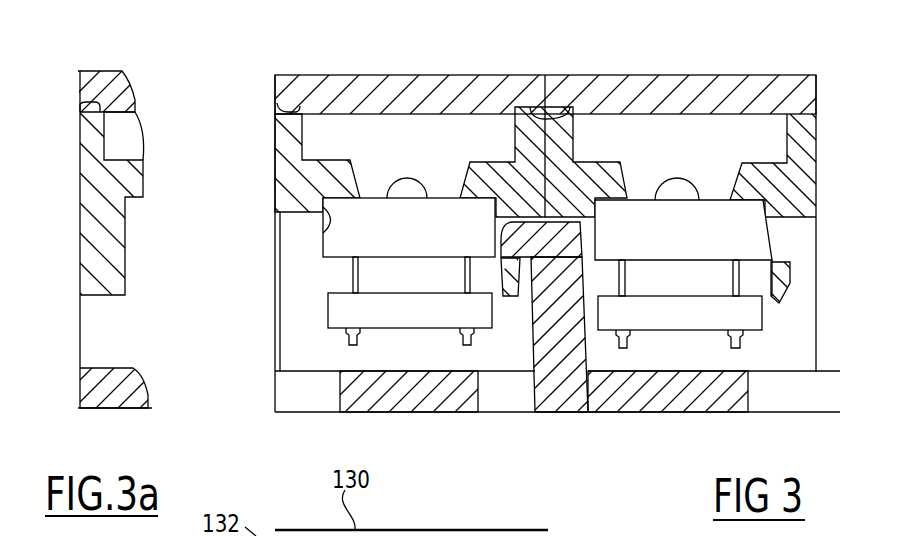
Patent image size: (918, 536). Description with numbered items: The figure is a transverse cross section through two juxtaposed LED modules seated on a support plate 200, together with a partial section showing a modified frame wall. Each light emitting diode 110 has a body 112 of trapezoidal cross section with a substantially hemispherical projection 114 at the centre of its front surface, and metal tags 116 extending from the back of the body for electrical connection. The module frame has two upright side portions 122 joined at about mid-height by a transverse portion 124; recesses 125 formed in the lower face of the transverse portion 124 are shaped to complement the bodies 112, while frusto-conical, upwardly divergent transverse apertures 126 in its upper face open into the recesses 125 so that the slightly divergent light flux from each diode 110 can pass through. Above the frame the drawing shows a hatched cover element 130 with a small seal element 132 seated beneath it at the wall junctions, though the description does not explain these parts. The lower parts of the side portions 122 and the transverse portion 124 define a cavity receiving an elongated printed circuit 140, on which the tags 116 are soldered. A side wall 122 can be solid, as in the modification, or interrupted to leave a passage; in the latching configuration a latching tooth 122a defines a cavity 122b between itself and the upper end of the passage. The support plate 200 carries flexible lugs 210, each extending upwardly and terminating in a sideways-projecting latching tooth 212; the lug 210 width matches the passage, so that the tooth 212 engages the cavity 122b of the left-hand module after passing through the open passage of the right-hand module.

In FIG. 3, the light emitting diode 110 is at (486, 244).
In FIG. 3, the body 112 is at (412, 243).
In FIG. 3, the projection 114 is at (405, 186).
In FIG. 3, the metal tags 116 is at (465, 278).
In FIG. 3A, the upright side portions 122 is at (80, 143).
In FIG. 3, the upright side portions 122 is at (503, 112).
In FIG. 3, the latching tooth 122a is at (512, 290).
In FIG. 3, the cavity 122b is at (796, 242).
In FIG. 3A, the transverse portion 124 is at (148, 200).
In FIG. 3, the recesses 125 is at (323, 228).
In FIG. 3, the transverse apertures 126 is at (513, 125).
In FIG. 3A, the cover plate 130 is at (108, 85).
In FIG. 3, the cover plate 130 is at (330, 88).
In FIG. 3A, the seal 132 is at (80, 108).
In FIG. 3, the seal 132 is at (567, 110).
In FIG. 3, the printed circuit 140 is at (410, 318).
In FIG. 3A, the support plate 200 is at (117, 388).
In FIG. 3, the support plate 200 is at (645, 397).
In FIG. 3, the flexible lugs 210 is at (560, 320).
In FIG. 3, the latching tooth 212 is at (500, 235).